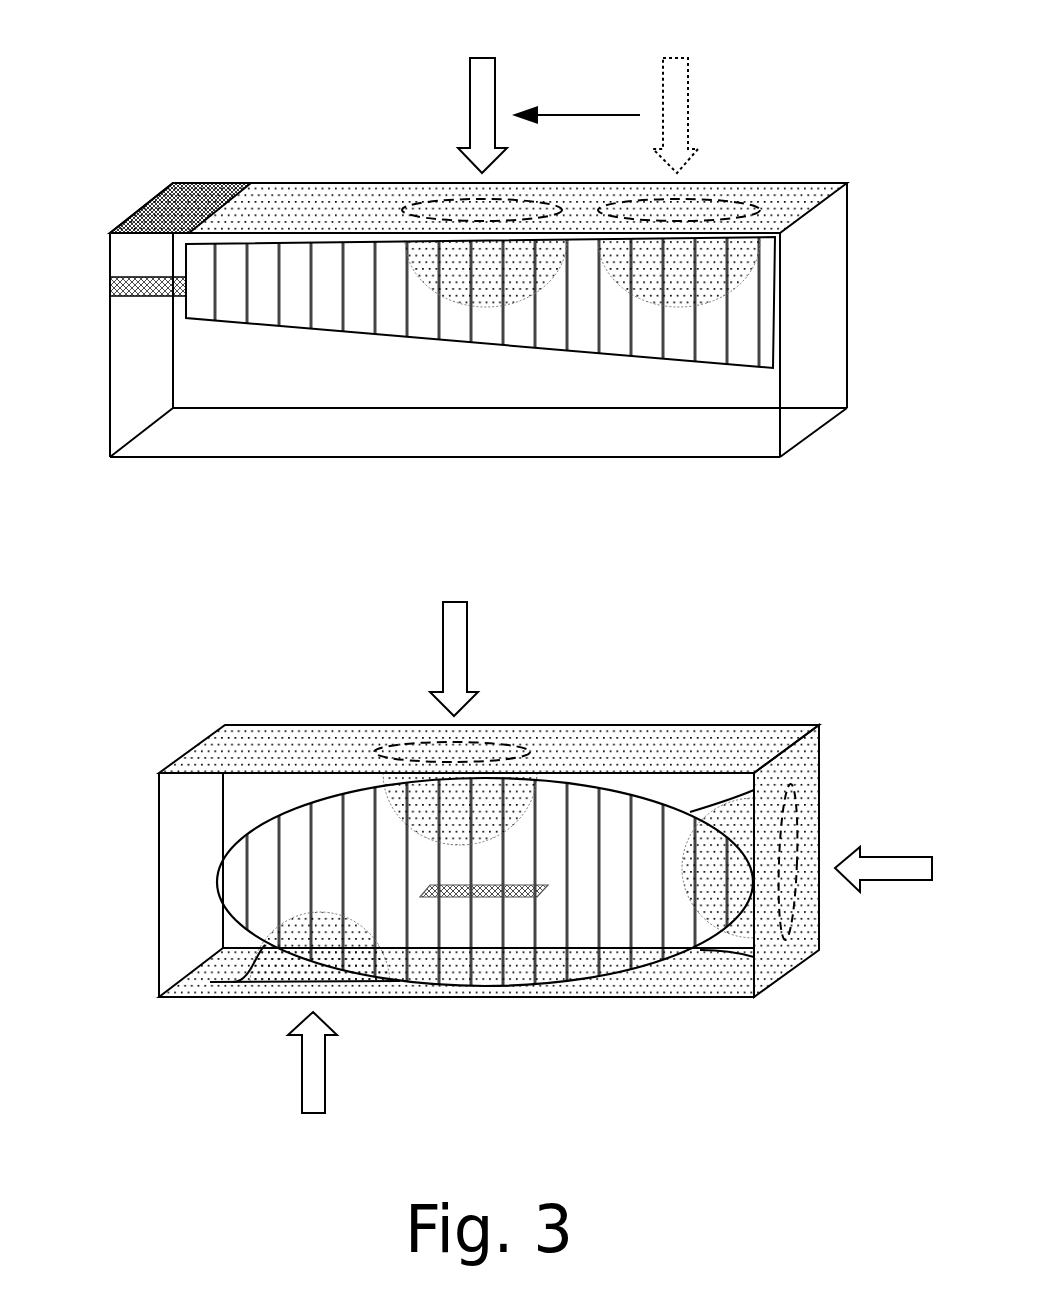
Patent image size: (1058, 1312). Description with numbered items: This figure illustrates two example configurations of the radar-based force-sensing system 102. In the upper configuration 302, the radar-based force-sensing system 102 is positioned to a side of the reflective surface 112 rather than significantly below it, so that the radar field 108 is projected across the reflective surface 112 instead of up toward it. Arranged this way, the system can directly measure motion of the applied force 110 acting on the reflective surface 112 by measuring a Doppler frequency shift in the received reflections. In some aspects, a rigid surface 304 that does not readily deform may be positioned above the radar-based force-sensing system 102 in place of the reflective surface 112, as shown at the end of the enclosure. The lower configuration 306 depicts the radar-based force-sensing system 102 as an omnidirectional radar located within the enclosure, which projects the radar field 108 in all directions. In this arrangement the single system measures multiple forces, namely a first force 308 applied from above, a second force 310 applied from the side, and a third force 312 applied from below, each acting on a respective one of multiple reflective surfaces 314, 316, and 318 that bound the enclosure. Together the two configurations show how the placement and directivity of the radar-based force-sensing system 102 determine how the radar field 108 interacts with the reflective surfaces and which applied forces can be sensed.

The configuration 302 is at (156, 56).
The rigid surface 304 is at (141, 212).
The radar-based force-sensing system 102 is at (150, 277).
The applied force 110 is at (688, 99).
The reflective surface 112 is at (792, 198).
The radar field 108 is at (755, 366).
The additional configuration 306 is at (158, 626).
The force 308 is at (467, 648).
The force 310 is at (880, 857).
The force 312 is at (325, 1093).
The reflective surface 314 is at (742, 740).
The reflective surface 316 is at (798, 768).
The reflective surface 318 is at (718, 982).